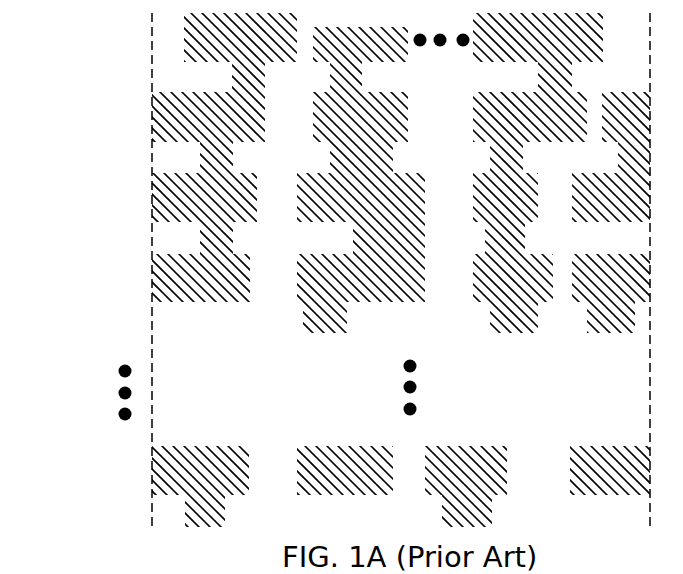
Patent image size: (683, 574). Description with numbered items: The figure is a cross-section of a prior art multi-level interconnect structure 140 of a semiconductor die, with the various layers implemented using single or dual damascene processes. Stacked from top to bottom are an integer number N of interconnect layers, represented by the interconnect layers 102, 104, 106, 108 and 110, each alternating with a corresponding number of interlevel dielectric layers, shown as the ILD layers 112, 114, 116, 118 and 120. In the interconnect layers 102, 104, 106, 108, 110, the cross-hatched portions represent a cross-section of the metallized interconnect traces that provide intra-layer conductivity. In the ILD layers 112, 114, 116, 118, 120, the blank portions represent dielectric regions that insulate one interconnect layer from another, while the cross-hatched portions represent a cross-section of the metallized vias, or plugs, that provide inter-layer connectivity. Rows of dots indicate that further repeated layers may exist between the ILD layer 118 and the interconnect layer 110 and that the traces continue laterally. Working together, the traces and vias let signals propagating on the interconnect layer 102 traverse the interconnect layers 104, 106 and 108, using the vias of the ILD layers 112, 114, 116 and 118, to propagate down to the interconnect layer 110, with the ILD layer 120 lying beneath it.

The interconnect layer 102 is at (137, 13).
The ILD layer 112 is at (137, 62).
The interconnect layer 104 is at (137, 92).
The ILD layer 114 is at (137, 142).
The interconnect layer 106 is at (137, 173).
The ILD layer 116 is at (137, 222).
The interconnect layer 108 is at (137, 254).
The ILD layer 118 is at (137, 302).
The interconnect layer 110 is at (137, 446).
The ILD layer 120 is at (137, 495).
The interconnect structure 140 is at (385, 293).